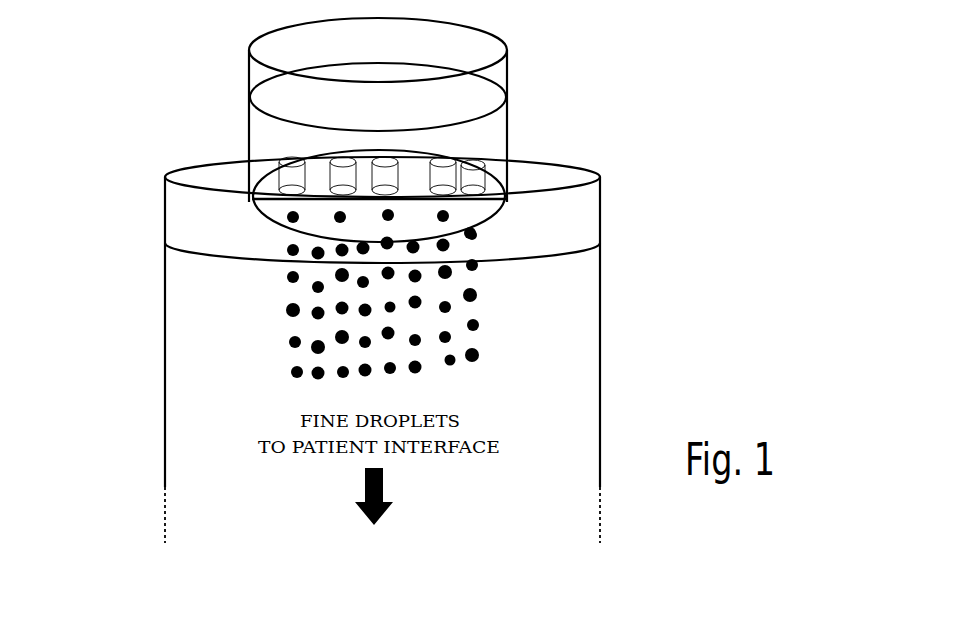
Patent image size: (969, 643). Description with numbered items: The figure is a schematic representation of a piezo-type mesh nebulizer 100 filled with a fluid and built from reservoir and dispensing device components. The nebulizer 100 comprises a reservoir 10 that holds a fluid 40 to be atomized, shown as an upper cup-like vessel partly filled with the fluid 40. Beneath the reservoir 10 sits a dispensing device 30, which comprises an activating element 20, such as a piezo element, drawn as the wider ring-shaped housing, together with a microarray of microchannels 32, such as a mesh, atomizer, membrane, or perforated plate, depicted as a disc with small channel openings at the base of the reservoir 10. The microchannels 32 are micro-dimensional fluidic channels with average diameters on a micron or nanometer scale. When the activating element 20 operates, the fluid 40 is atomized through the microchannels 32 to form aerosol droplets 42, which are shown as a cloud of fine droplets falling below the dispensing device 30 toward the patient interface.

The mesh nebulizer 100 is at (100, 318).
The reservoir 10 is at (480, 21).
The fluid 40 is at (513, 137).
The dispensing device 30 is at (530, 157).
The microchannels 32 is at (283, 185).
The activating element 20 is at (583, 222).
The aerosol droplets 42 is at (288, 310).